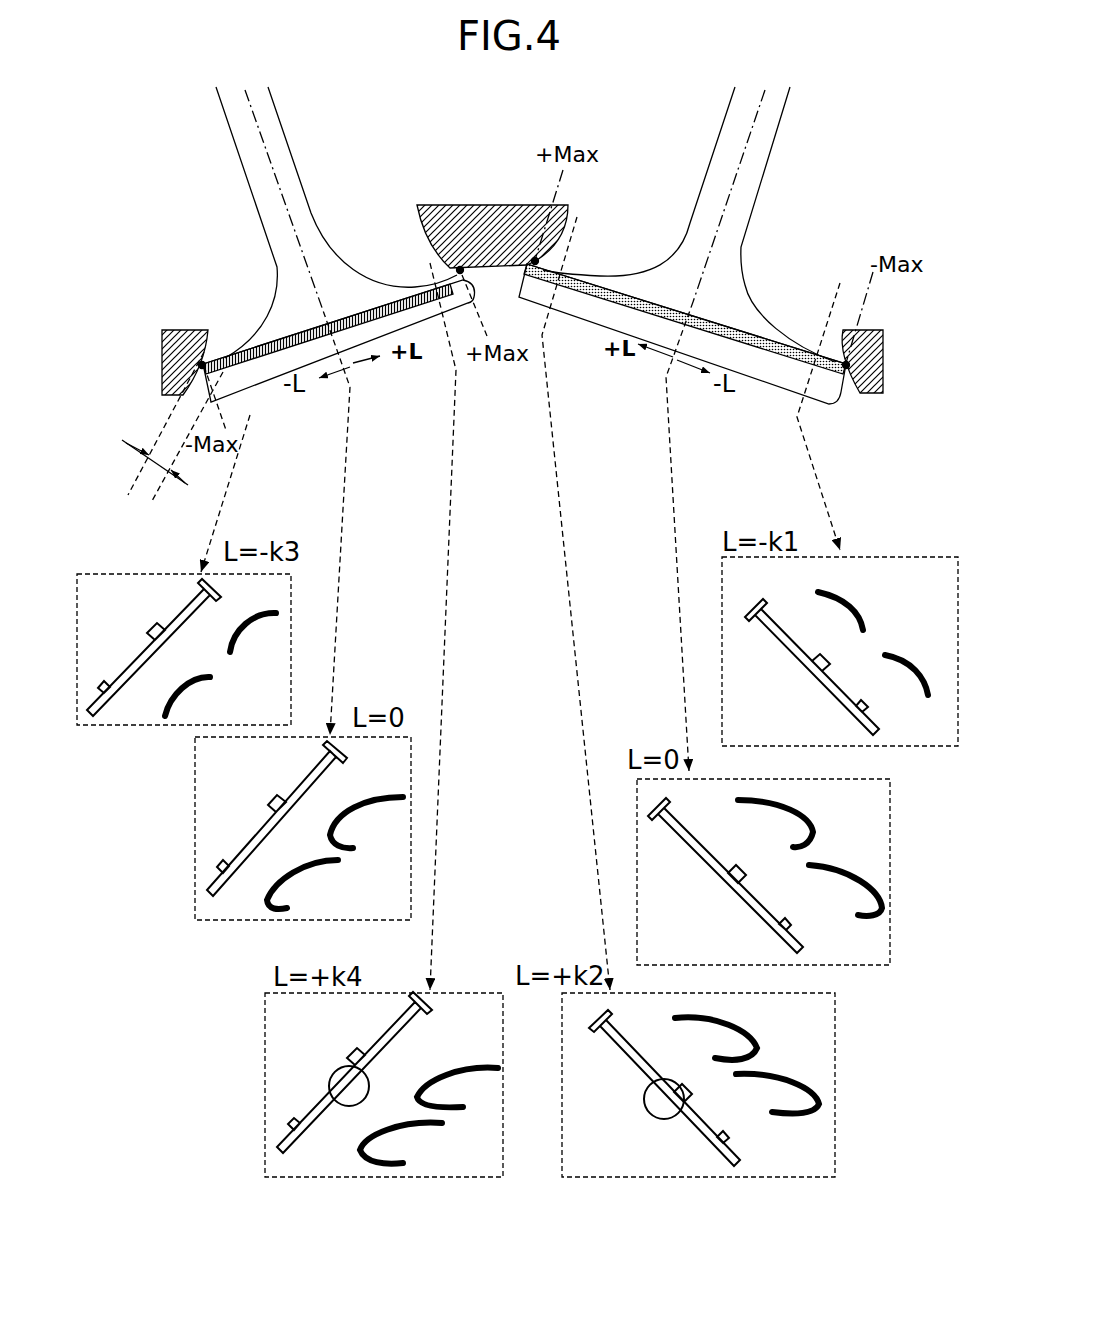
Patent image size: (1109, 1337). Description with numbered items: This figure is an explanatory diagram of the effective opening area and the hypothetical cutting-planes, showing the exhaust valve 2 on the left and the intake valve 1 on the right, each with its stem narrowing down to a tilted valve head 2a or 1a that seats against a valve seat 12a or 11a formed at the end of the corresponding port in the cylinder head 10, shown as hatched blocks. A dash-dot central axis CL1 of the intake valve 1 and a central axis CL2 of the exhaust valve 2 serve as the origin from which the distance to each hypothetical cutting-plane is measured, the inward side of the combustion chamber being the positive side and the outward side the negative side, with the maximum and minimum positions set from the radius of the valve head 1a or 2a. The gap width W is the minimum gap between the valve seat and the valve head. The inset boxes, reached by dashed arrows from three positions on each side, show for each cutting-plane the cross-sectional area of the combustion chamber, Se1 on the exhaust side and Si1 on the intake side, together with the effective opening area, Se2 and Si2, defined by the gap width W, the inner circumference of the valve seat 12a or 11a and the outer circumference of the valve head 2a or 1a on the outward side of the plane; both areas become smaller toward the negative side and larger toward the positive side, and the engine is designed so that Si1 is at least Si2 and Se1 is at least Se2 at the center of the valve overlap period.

The intake valve 1 is at (766, 157).
The exhaust valve 2 is at (292, 158).
The valve head 1a is at (575, 302).
The valve head 2a is at (272, 380).
The cylinder head 10 is at (465, 207).
The valve seat 11a is at (538, 259).
The valve seat 12a is at (457, 269).
The central axis CL1 is at (256, 110).
The central axis CL2 is at (748, 118).
The cross-sectional area Se1 is at (150, 632).
The effective opening area Se2 is at (276, 341).
The cross-sectional area Si1 is at (658, 1110).
The effective opening area Si2 is at (647, 296).
The gap width W is at (165, 426).